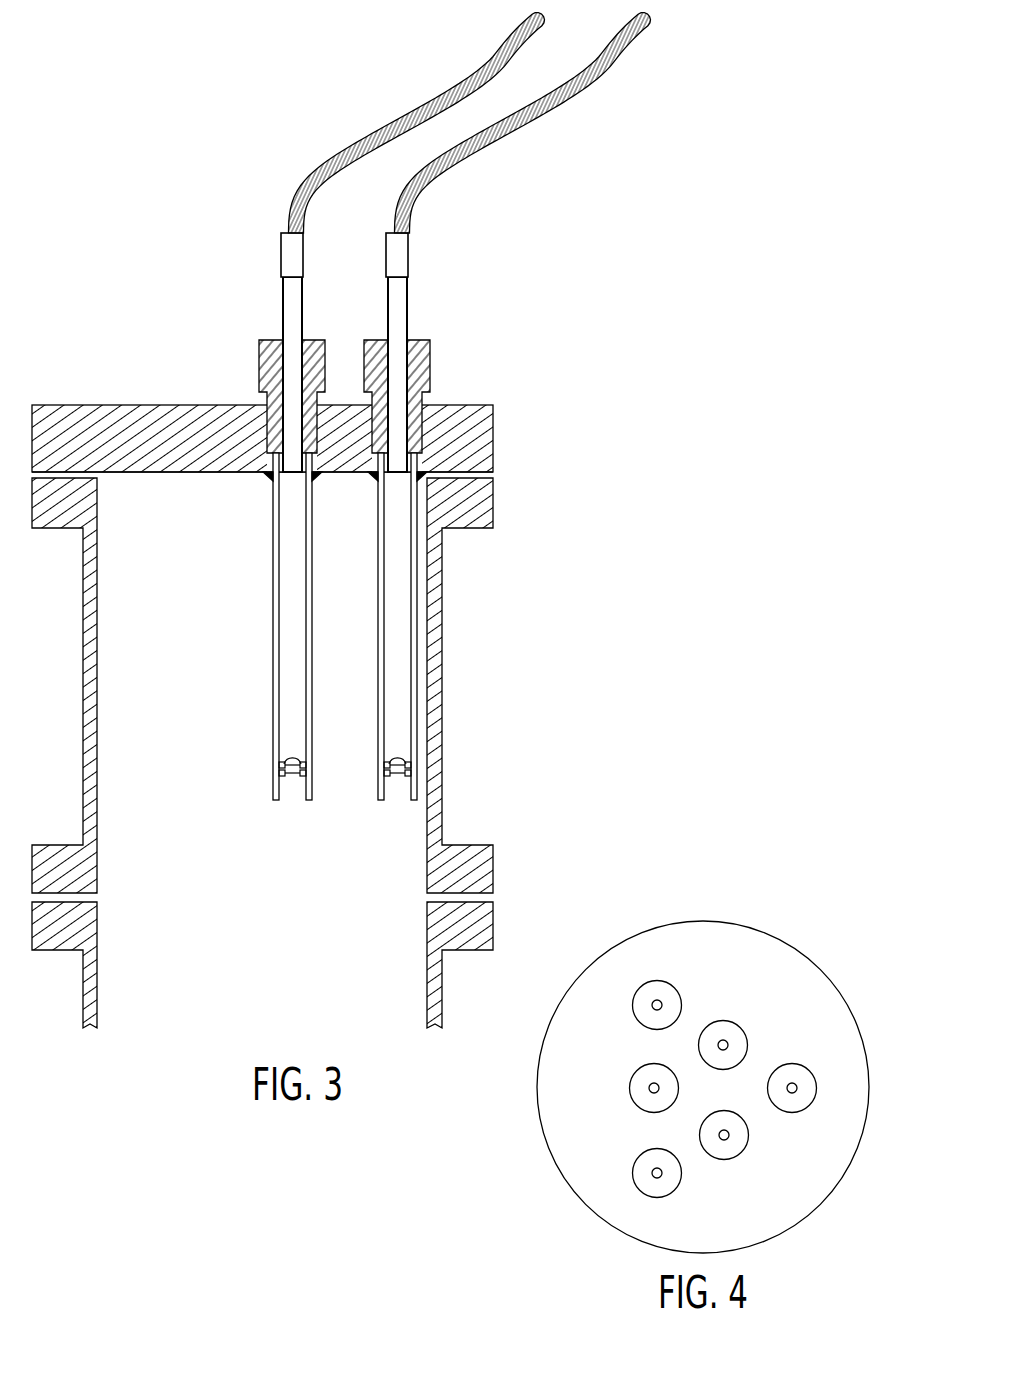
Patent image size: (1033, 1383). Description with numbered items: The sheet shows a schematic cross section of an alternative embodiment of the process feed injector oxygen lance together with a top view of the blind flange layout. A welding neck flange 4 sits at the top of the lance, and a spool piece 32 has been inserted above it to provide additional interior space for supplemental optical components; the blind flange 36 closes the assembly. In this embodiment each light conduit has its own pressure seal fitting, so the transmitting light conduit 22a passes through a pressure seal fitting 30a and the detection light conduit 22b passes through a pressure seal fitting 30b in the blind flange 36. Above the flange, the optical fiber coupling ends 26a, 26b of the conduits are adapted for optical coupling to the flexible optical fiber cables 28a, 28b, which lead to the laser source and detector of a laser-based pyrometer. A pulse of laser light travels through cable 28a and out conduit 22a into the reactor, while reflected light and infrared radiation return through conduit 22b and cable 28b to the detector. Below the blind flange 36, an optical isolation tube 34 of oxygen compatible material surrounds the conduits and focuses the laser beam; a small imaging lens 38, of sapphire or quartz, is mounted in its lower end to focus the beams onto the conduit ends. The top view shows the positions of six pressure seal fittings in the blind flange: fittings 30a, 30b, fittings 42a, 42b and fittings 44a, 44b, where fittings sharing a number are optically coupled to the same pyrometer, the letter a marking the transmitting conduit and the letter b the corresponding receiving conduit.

In FIG. 3, the welding neck flange 4 is at (493, 918).
In FIG. 3, the transmitting light conduit 22a is at (401, 323).
In FIG. 3, the detection light conduit 22b is at (283, 325).
In FIG. 3, the optical fiber coupling end 26a is at (406, 270).
In FIG. 3, the optical fiber coupling end 26b is at (283, 266).
In FIG. 3, the flexible optical fiber cable 28a is at (600, 80).
In FIG. 3, the flexible fiber optic cable 28b is at (488, 64).
In FIG. 3, the pressure seal fitting 30a is at (427, 371).
In FIG. 4, the pressure seal fitting 30a is at (802, 1103).
In FIG. 3, the pressure seal fitting 30b is at (267, 381).
In FIG. 4, the pressure seal fitting 30b is at (740, 1147).
In FIG. 3, the spool piece 32 is at (92, 656).
In FIG. 3, the optical isolation tube 34 is at (413, 678).
In FIG. 3, the blind flange 36 is at (135, 406).
In FIG. 3, the imaging lens 38 is at (402, 767).
In FIG. 4, the pressure seal fitting 42a is at (735, 1038).
In FIG. 4, the pressure seal fitting 42b is at (670, 1000).
In FIG. 4, the pressure seal fitting 44a is at (643, 1075).
In FIG. 4, the pressure seal fitting 44b is at (673, 1180).